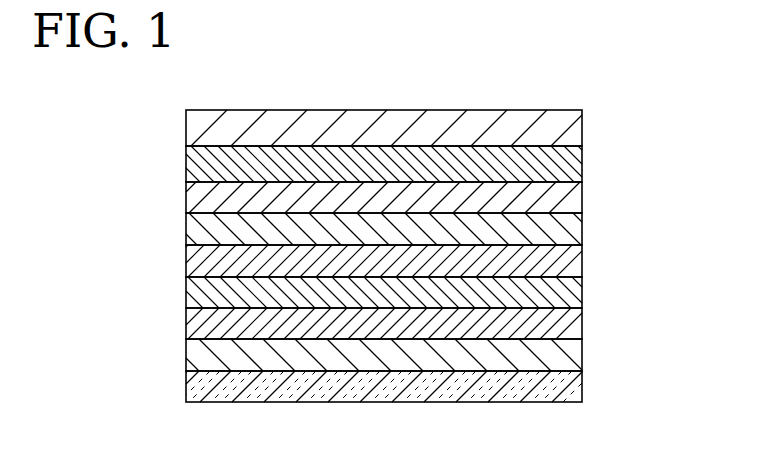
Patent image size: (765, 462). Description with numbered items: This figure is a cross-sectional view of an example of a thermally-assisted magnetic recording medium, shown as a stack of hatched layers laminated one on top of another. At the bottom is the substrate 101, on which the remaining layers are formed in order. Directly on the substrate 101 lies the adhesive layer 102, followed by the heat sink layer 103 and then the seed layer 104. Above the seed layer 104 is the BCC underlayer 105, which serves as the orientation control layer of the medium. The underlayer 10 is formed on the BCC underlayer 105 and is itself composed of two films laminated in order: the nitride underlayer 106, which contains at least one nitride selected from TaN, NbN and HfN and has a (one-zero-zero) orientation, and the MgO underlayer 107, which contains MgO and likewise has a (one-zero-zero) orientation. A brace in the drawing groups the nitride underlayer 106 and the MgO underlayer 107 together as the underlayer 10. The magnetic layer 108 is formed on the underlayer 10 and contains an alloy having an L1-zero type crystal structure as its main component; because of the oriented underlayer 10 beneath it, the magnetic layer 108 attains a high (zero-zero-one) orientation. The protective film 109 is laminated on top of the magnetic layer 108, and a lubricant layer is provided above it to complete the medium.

The underlayer 10 is at (451, 241).
The substrate 101 is at (573, 393).
The adhesive layer 102 is at (573, 360).
The heat sink layer 103 is at (573, 330).
The seed layer 104 is at (573, 297).
The BCC underlayer 105 is at (573, 262).
The nitride underlayer 106 is at (573, 235).
The MgO underlayer 107 is at (573, 199).
The magnetic layer 108 is at (573, 162).
The protective film 109 is at (573, 133).